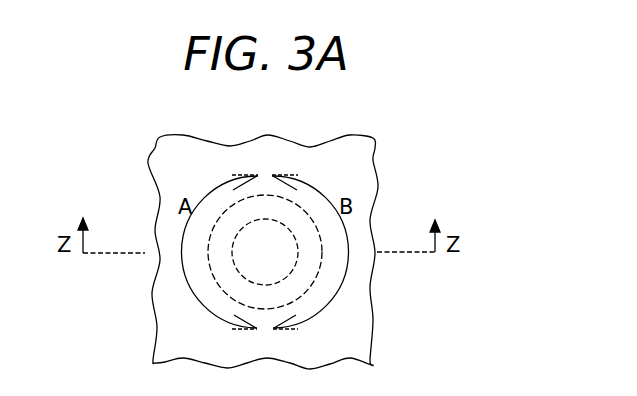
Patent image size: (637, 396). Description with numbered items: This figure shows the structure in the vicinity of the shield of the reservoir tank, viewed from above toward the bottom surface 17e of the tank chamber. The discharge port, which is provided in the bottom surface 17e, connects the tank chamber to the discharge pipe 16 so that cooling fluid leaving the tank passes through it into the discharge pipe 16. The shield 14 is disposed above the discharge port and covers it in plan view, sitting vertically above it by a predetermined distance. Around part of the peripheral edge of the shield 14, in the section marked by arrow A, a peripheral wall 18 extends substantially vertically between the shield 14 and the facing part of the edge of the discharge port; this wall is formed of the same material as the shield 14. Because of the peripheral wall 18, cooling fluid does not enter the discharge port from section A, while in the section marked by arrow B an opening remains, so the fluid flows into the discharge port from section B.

The shield 14 is at (275, 236).
The discharge pipe 16 is at (320, 243).
The bottom surface 17e is at (342, 345).
The peripheral wall 18 is at (208, 277).